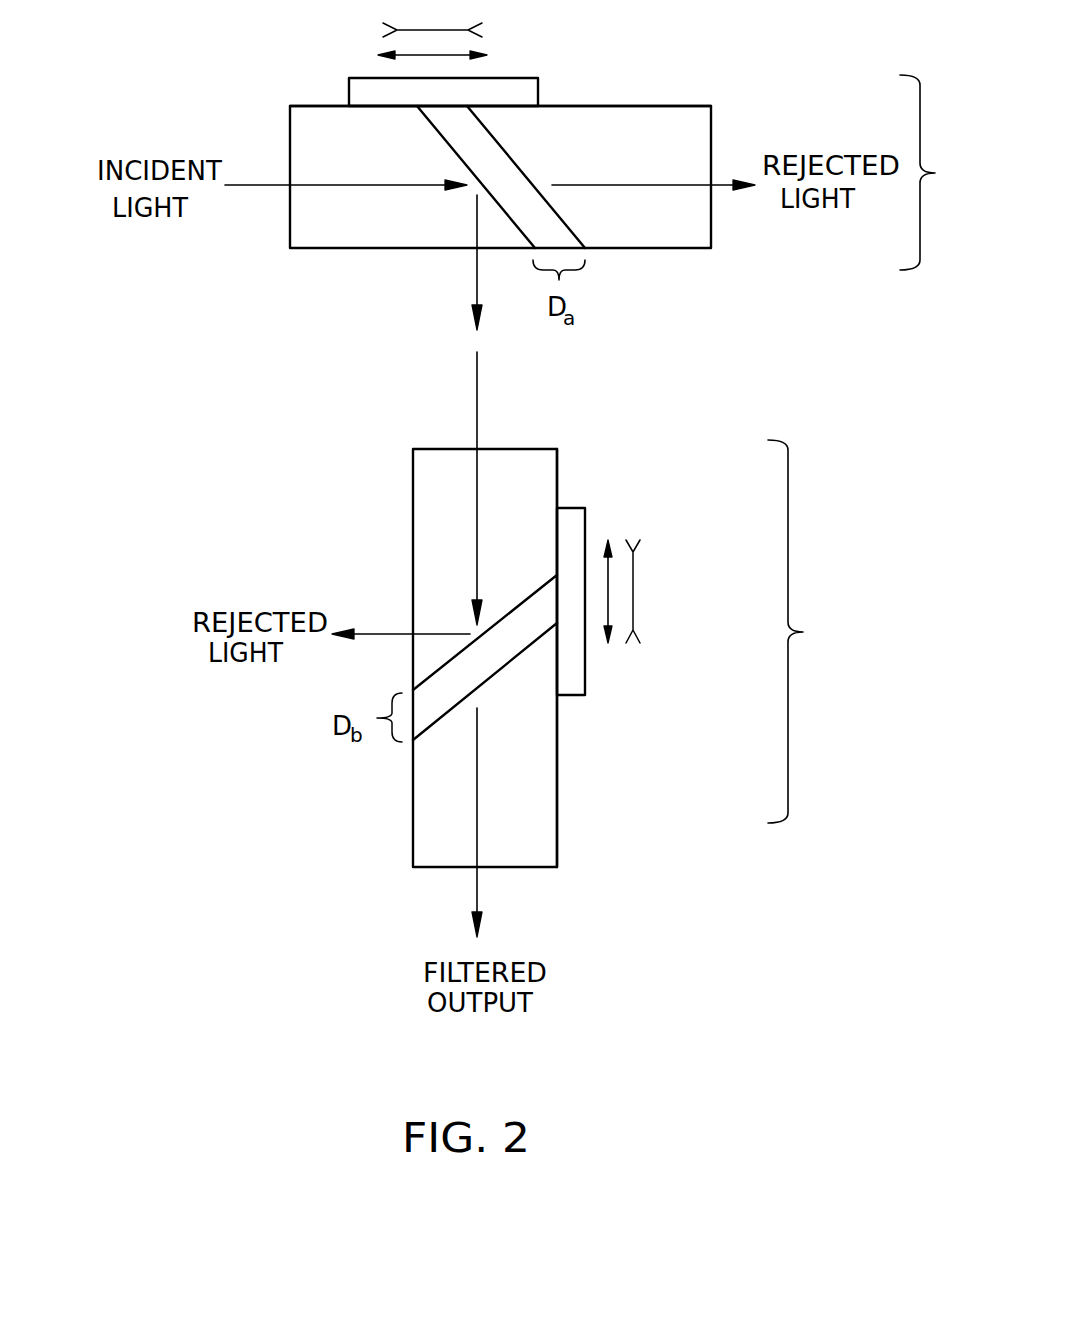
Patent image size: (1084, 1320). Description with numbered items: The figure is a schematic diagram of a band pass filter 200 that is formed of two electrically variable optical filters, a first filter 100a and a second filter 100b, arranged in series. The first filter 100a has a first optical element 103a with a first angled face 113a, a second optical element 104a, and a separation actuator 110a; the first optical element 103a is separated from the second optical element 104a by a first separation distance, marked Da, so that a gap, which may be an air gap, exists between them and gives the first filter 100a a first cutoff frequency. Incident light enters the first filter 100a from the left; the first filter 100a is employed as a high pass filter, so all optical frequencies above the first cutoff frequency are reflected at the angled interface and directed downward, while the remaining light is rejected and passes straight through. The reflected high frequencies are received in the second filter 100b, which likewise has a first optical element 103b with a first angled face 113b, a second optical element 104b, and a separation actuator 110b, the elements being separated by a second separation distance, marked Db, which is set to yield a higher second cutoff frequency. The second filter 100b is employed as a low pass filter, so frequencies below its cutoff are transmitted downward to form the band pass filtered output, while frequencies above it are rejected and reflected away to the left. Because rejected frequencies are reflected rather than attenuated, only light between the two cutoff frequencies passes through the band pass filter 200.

The first filter 100a is at (935, 173).
The first optical element 103a is at (312, 105).
The second optical element 104a is at (635, 105).
The separation actuator 110a is at (523, 78).
The first angled face 113a is at (440, 137).
The second filter 100b is at (825, 631).
The first optical element 103b is at (557, 477).
The second optical element 104b is at (557, 790).
The separation actuator 110b is at (585, 677).
The first angled face 113b is at (518, 605).
The band pass filter 200 is at (275, 980).